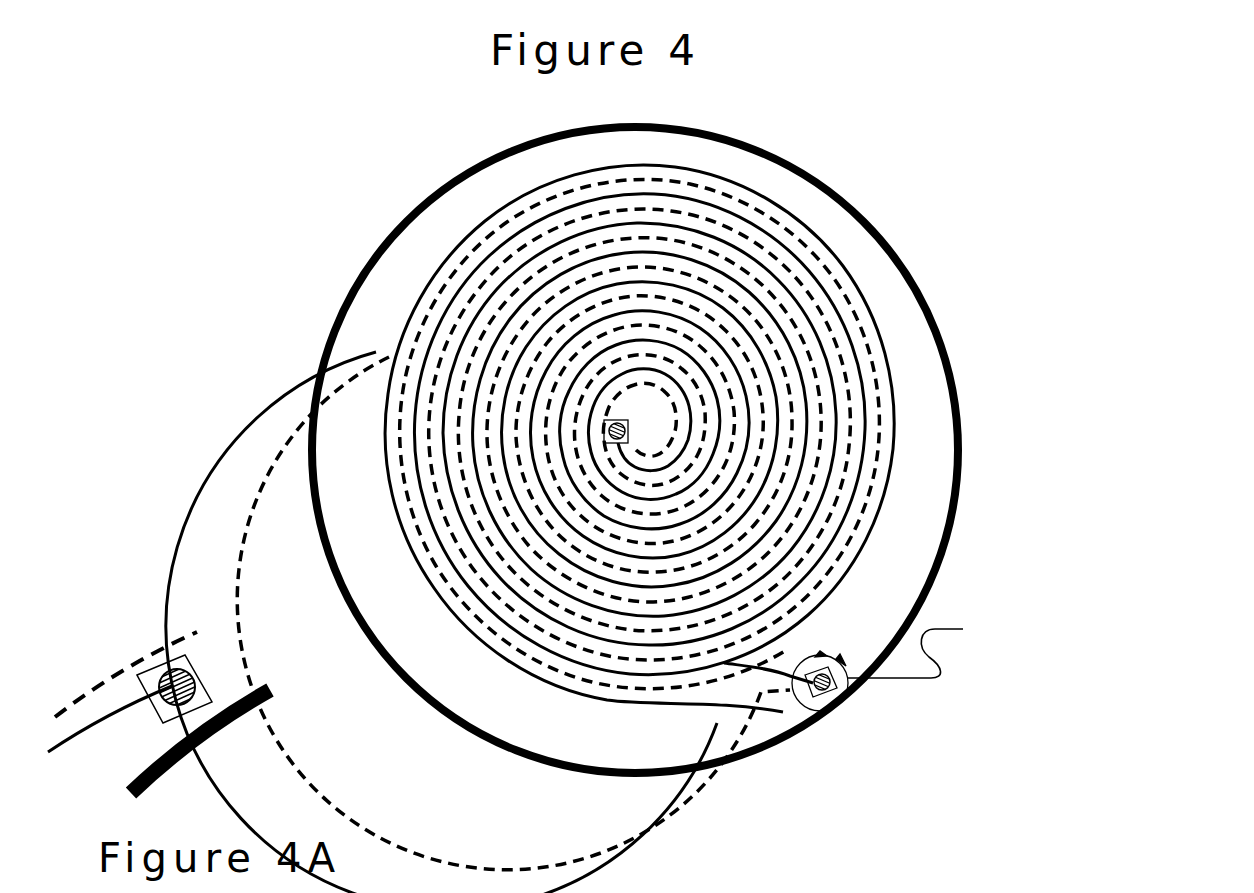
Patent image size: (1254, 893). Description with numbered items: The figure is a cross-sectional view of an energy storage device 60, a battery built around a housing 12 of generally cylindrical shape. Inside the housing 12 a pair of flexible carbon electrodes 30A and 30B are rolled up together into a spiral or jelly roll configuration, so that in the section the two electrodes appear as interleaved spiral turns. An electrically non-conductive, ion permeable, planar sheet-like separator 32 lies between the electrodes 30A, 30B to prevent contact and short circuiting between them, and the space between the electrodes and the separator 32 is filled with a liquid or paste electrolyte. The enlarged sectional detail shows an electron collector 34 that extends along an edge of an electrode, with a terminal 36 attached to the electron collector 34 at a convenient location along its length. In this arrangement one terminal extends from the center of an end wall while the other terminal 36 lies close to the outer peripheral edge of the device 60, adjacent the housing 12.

In FIG. 4, the energy storage device 60 is at (944, 140).
In FIG. 4, the housing 12 is at (907, 267).
In FIG. 4A, the housing 12 is at (235, 737).
In FIG. 4, the flexible carbon electrode 30A is at (885, 335).
In FIG. 4A, the flexible carbon electrode 30A is at (80, 743).
In FIG. 4, the flexible carbon electrode 30B is at (870, 410).
In FIG. 4, the separator 32 is at (875, 488).
In FIG. 4A, the separator 32 is at (122, 683).
In FIG. 4, the electron collector 34 is at (604, 433).
In FIG. 4A, the electron collector 34 is at (193, 661).
In FIG. 4A, the terminal 36 is at (200, 693).